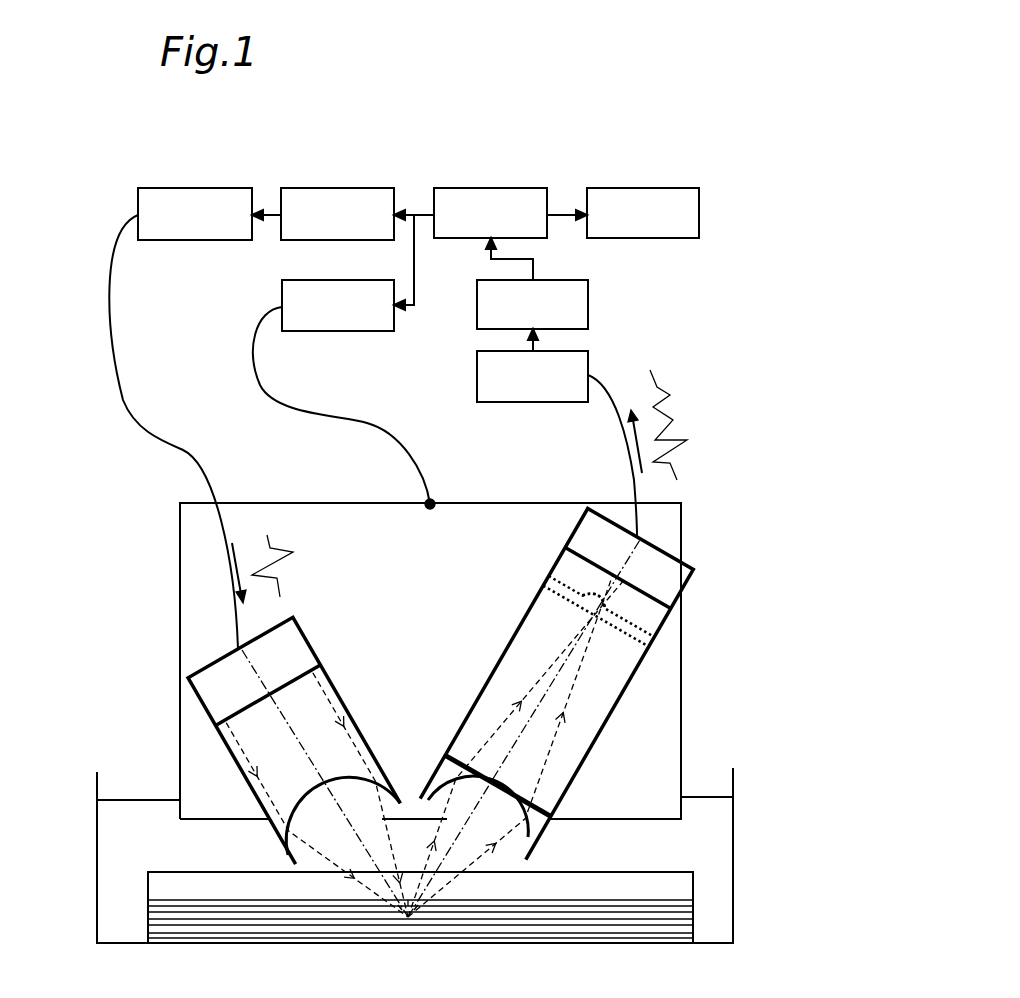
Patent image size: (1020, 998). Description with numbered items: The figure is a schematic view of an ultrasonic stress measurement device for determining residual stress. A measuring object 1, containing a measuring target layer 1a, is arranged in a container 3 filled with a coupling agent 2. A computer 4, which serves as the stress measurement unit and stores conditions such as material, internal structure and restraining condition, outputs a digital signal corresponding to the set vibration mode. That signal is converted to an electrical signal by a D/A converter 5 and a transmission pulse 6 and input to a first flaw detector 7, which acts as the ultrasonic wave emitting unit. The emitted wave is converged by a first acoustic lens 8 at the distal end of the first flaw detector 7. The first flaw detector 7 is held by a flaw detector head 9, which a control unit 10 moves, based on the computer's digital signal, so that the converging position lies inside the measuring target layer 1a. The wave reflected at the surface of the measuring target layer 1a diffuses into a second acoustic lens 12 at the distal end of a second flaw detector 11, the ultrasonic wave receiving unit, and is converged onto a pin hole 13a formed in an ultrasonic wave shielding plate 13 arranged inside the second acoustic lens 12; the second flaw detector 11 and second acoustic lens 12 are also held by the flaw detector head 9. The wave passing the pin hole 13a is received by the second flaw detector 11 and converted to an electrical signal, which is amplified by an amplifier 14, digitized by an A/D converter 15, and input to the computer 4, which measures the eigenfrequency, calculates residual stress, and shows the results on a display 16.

The measuring object 1 is at (722, 903).
The measuring target layer 1a is at (150, 921).
The coupling agent 2 is at (713, 842).
The container 3 is at (735, 777).
The computer 4 is at (483, 188).
The D/A converter 5 is at (320, 188).
The transmission pulse 6 is at (191, 188).
The first flaw detector 7 is at (188, 687).
The first acoustic lens 8 is at (265, 819).
The flaw detector head 9 is at (180, 545).
The control unit 10 is at (332, 318).
The second flaw detector 11 is at (693, 578).
The second acoustic lens 12 is at (573, 797).
The ultrasonic wave shielding plate 13 is at (647, 638).
The pin hole 13a is at (556, 575).
The amplifier 14 is at (584, 358).
The A/D converter 15 is at (582, 318).
The display 16 is at (645, 188).